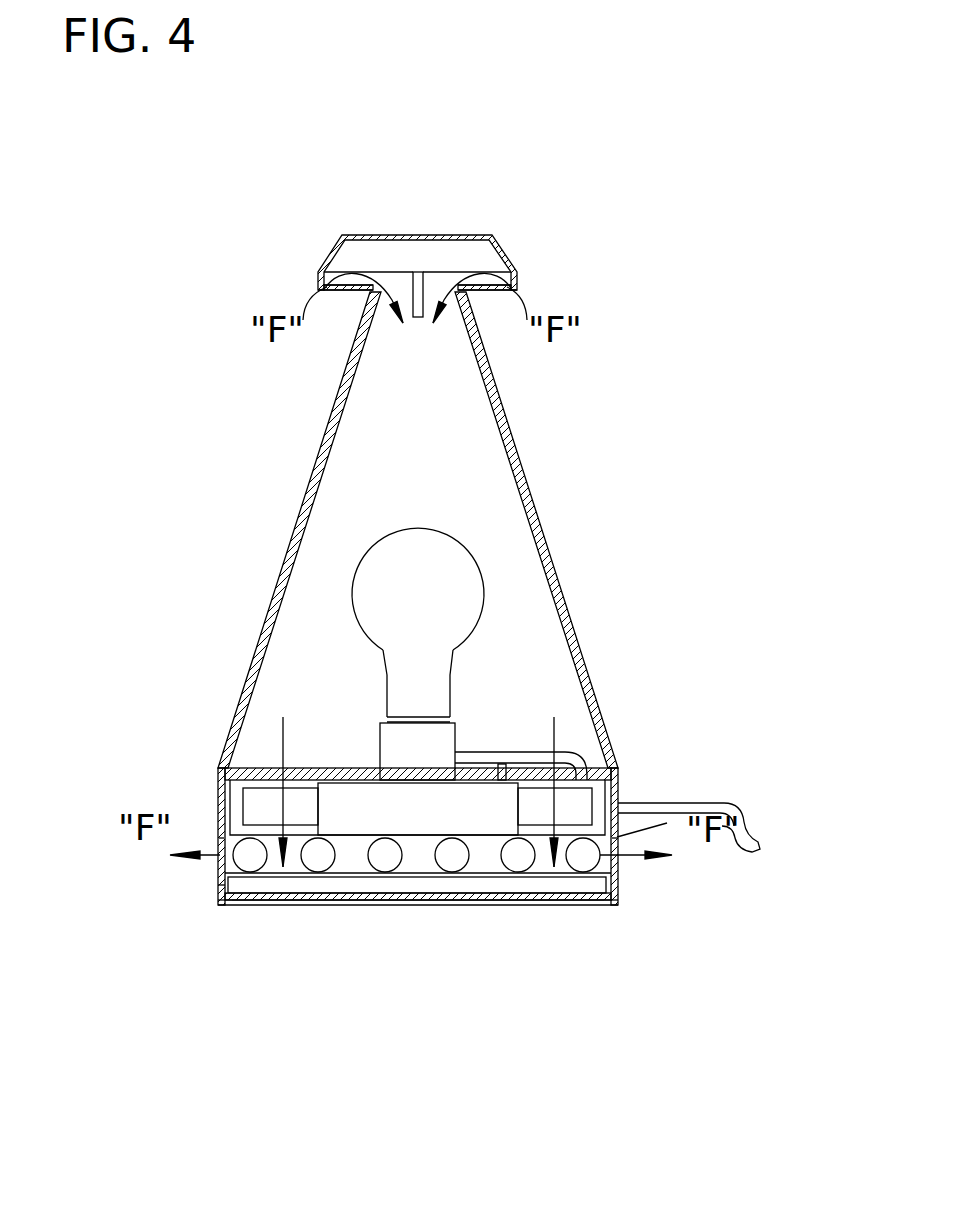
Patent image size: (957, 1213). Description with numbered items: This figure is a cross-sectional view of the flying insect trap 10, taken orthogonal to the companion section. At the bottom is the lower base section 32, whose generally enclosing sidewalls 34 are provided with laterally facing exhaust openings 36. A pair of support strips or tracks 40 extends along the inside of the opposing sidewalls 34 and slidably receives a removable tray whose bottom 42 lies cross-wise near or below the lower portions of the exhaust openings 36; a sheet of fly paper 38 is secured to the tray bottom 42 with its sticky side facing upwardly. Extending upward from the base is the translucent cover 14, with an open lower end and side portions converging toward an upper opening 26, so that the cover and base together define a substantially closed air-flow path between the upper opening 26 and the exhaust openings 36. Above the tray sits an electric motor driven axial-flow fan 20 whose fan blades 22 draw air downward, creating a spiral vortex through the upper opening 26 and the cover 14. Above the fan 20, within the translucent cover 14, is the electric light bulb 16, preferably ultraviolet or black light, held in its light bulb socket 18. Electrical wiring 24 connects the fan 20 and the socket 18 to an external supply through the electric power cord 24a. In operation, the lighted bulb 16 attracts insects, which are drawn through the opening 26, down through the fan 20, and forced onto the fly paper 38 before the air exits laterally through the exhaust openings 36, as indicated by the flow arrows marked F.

The flying insect trap 10 is at (683, 317).
The cover 14 is at (522, 457).
The electric light bulb 16 is at (353, 573).
The light bulb socket 18 is at (452, 728).
The axial-flow fan 20 is at (220, 775).
The fan blades 22 is at (247, 810).
The electrical wiring 24 is at (540, 752).
The electric power cord 24a is at (753, 828).
The upper opening 26 is at (483, 285).
The lower base section 32 is at (215, 885).
The sidewalls 34 is at (616, 893).
The exhaust openings 36 is at (618, 847).
The fly paper 38 is at (592, 883).
The support strips or tracks 40 is at (609, 903).
The tray bottom 42 is at (558, 902).